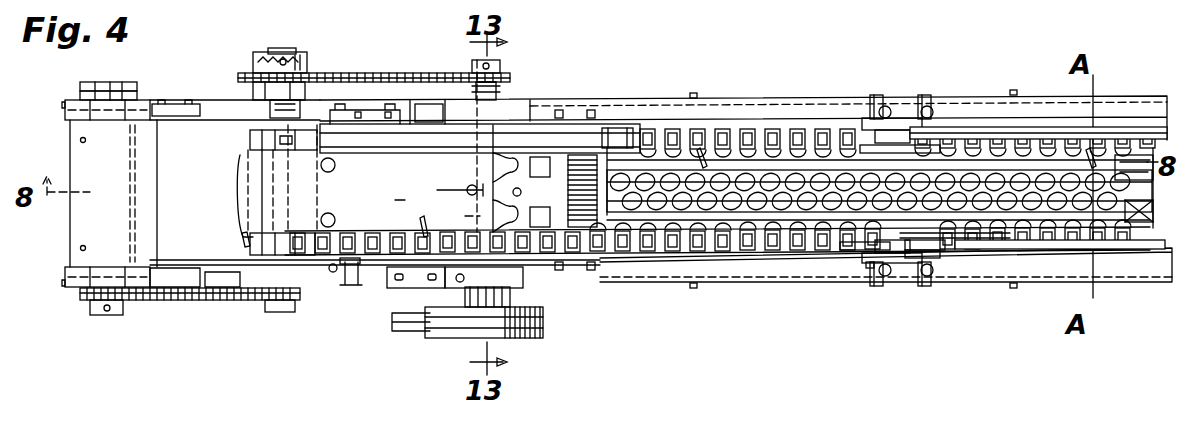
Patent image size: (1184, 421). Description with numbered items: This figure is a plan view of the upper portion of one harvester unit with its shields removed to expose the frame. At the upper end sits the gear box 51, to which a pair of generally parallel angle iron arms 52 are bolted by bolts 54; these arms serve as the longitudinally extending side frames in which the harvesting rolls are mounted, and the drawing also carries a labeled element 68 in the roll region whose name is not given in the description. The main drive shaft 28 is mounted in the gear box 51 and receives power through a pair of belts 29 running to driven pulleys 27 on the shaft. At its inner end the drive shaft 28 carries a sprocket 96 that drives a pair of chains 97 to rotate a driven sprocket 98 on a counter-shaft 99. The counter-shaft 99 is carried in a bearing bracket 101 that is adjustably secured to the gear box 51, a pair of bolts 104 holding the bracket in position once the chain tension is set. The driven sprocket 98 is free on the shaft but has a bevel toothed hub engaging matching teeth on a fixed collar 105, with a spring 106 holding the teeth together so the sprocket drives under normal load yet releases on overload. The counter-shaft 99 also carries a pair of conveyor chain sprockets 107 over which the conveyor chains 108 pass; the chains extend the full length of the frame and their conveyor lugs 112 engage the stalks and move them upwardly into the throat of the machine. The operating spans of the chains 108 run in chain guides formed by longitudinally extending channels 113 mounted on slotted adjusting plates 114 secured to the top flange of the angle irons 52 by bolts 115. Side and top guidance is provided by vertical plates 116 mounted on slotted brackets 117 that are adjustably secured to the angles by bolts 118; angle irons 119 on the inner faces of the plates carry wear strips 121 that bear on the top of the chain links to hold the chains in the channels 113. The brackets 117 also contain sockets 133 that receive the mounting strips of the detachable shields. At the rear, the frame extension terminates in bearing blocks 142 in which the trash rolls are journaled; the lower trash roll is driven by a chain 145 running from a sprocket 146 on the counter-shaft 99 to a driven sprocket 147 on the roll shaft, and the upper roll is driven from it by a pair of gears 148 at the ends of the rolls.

The driven pulley 27 is at (530, 338).
The main drive shaft 28 is at (458, 211).
The belts 29 is at (407, 313).
The gear box 51 is at (380, 176).
The angle iron arms 52 is at (677, 99).
The bolts 54 is at (591, 109).
The screw conveyor 68 is at (780, 170).
The sprocket 96 is at (500, 66).
The chains 97 is at (423, 73).
The driven sprocket 98 is at (268, 106).
The counter-shaft 99 is at (282, 52).
The bearing bracket 101 is at (177, 103).
The bolts 104 is at (331, 212).
The fixed collar 105 is at (275, 50).
The spring 106 is at (253, 92).
The conveyor chain sprockets 107 is at (250, 143).
The conveyor chains 108 is at (810, 135).
The conveyor lugs 112 is at (702, 150).
The channels 113 is at (620, 132).
The slotted adjusting plates 114 is at (912, 262).
The bolts 115 is at (933, 127).
The vertical plates 116 is at (510, 122).
The slotted brackets 117 is at (873, 95).
The bolts 118 is at (884, 106).
The angle irons 119 is at (1000, 132).
The wear strips 121 is at (890, 140).
The sockets 133 is at (868, 266).
The bearing blocks 142 is at (75, 108).
The chain 145 is at (205, 302).
The sprocket 146 is at (283, 313).
The driven sprocket 147 is at (92, 317).
The gears 148 is at (78, 86).